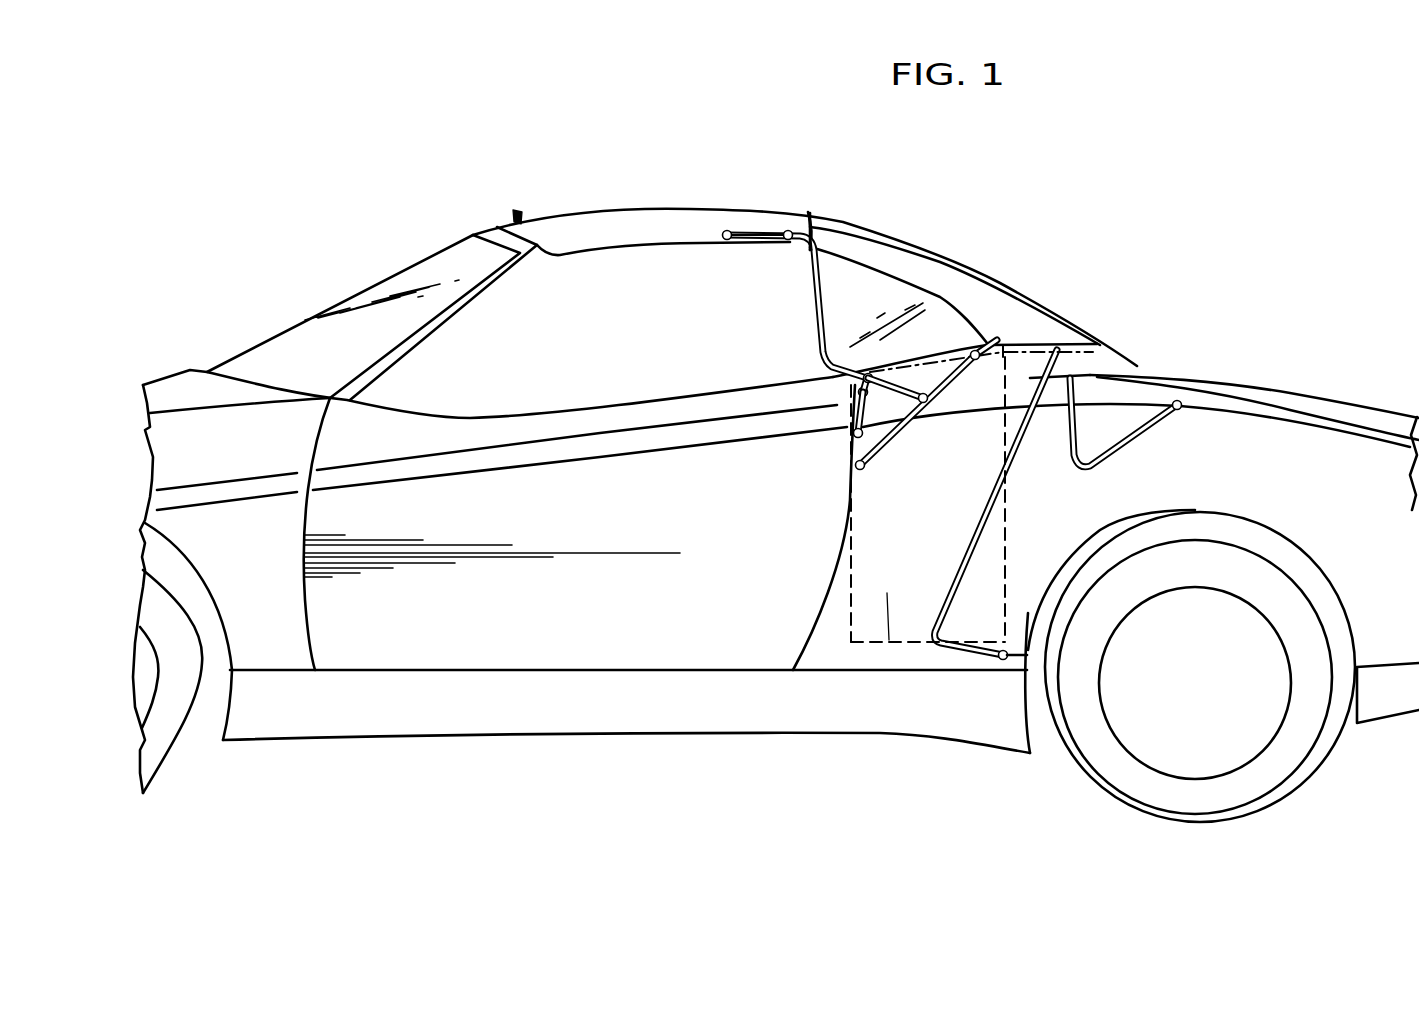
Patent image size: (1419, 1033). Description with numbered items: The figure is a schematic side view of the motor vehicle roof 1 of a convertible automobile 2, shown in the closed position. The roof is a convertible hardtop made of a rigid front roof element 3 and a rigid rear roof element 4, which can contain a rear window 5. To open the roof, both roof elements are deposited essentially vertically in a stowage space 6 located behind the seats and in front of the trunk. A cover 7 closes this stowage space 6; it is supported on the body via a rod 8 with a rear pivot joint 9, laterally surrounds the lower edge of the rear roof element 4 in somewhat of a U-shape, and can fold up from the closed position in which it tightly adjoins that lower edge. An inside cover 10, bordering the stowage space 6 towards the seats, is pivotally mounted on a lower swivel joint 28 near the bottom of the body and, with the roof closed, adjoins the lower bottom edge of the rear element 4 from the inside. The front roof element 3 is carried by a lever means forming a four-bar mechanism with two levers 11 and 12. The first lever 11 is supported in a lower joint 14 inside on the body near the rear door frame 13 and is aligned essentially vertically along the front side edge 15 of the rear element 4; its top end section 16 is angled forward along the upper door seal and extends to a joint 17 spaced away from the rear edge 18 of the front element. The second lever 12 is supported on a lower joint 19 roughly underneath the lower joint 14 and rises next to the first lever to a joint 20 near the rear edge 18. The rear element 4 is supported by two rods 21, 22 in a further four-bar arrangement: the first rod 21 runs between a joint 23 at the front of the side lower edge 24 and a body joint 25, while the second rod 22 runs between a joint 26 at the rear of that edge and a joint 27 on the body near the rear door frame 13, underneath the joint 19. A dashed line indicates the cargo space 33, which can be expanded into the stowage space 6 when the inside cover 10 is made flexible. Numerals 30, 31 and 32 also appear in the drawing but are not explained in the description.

The motor vehicle roof 1 is at (665, 196).
The convertible automobile 2 is at (1196, 197).
The front roof element 3 is at (598, 222).
The rear roof element 4 is at (940, 253).
The rear window 5 is at (930, 317).
The stowage space 6 is at (1060, 500).
The cover 7 is at (1087, 362).
The rod 8 is at (1100, 513).
The rear pivot joint 9 is at (1177, 401).
The inside cover 10 is at (953, 575).
The first lever 11 is at (818, 307).
The second lever 12 is at (829, 289).
The rear door frame 13 is at (852, 522).
The lower joint 14 is at (845, 393).
The front side edge 15 is at (822, 368).
The top end section 16 is at (748, 231).
The joint 17 is at (725, 230).
The rear edge 18 is at (808, 211).
The lower joint 19 is at (855, 437).
The joint 20 is at (788, 230).
The first rod 21 is at (875, 390).
The second rod 22 is at (1062, 346).
The joint 23 is at (870, 372).
The side lower edge 24 is at (997, 283).
The joint 25 is at (925, 393).
The joint 26 is at (1013, 336).
The joint 27 is at (853, 474).
The lower swivel joint 28 is at (1003, 660).
The roof joint 30 is at (518, 213).
The B-pillar 31 is at (490, 228).
The rear side window 32 is at (363, 293).
The cargo space 33 is at (887, 593).